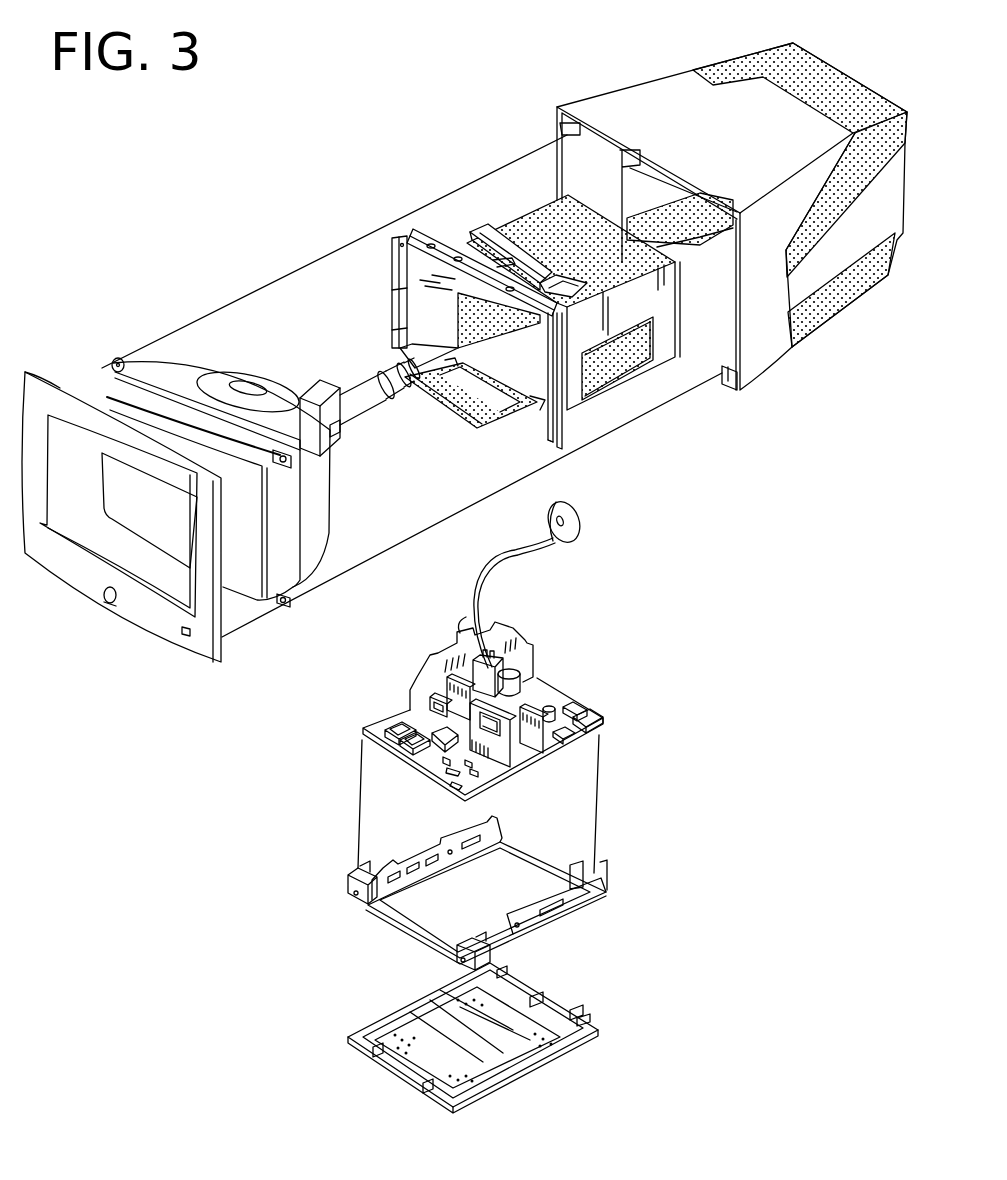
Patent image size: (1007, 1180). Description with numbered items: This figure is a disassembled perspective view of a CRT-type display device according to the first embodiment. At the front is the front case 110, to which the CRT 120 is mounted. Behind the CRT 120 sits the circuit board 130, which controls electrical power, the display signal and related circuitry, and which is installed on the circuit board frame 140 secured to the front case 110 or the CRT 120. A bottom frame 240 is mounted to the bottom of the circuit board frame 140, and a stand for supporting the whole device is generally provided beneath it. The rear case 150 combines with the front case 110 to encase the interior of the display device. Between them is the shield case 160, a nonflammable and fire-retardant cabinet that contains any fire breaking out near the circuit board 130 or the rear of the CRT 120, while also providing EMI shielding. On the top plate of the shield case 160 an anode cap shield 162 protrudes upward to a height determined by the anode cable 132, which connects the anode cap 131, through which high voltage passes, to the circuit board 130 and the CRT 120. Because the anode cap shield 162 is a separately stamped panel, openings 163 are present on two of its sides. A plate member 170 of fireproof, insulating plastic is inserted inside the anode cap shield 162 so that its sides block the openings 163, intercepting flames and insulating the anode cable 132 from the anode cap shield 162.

The front case 110 is at (75, 580).
The CRT 120 is at (190, 372).
The circuit board 130 is at (392, 720).
The anode cap 131 is at (577, 526).
The anode cable 132 is at (517, 552).
The circuit board frame 140 is at (350, 873).
The rear case 150 is at (693, 102).
The shield case 160 is at (395, 236).
The anode cap shield 162 is at (517, 247).
The openings 163 is at (565, 283).
The plate member 170 is at (445, 405).
The bottom frame 240 is at (350, 1030).